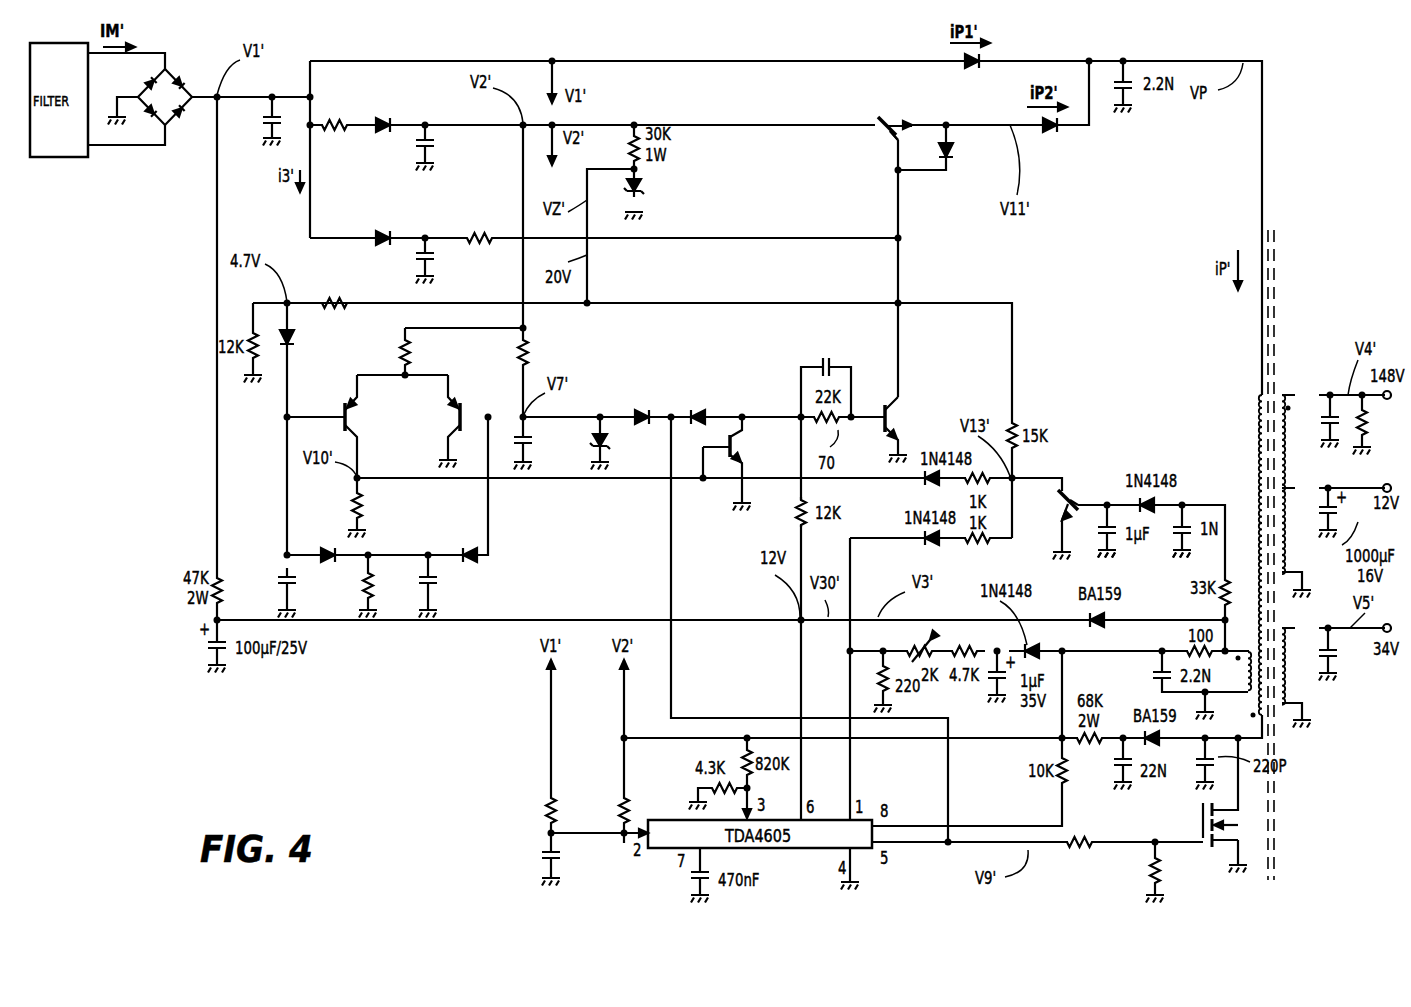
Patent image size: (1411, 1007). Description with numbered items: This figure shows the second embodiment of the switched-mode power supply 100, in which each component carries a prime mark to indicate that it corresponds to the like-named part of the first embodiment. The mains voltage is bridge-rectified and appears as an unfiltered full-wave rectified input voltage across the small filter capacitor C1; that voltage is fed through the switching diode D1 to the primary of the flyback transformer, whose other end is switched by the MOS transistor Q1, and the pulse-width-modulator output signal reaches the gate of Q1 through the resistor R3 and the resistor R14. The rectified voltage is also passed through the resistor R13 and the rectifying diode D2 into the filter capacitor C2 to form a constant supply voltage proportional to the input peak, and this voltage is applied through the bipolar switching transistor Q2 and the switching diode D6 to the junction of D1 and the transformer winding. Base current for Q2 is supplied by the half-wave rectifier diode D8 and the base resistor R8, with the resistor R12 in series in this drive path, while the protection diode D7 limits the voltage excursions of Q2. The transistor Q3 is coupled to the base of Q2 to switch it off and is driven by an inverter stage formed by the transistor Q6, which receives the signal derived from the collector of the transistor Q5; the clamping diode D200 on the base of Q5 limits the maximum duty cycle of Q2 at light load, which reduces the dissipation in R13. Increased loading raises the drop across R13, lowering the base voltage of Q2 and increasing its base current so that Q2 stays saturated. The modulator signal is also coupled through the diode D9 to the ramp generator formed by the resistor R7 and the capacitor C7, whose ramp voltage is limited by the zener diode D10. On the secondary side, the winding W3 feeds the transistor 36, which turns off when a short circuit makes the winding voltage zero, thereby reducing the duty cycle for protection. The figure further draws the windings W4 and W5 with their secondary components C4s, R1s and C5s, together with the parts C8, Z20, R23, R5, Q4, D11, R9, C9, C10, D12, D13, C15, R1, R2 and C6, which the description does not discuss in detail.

The filter capacitor C1 is at (254, 120).
The resistor R13 is at (334, 106).
The rectifying diode D2 is at (379, 103).
The filter capacitor C2 is at (445, 146).
The half-wave rectifier diode D8 is at (378, 216).
The capacitor C8 is at (451, 260).
The base resistor R8 is at (480, 215).
The zener diode Z20 is at (657, 191).
The resistor R23 is at (332, 281).
The clamping diode D200 is at (318, 341).
The resistor R5 is at (393, 350).
The resistor R7 is at (510, 350).
The transistor Q5 is at (369, 426).
The transistor Q4 is at (435, 417).
The resistor R12 is at (374, 505).
The diode D11 is at (325, 547).
The resistor R9 is at (390, 578).
The capacitor C9 is at (271, 587).
The capacitor C10 is at (448, 588).
The diode D12 is at (455, 529).
The capacitor C7 is at (542, 441).
The zener diode D10 is at (623, 451).
The diode D9 is at (639, 391).
The diode D13 is at (704, 391).
The transistor Q6 is at (748, 460).
The capacitor C15 is at (828, 341).
The transistor Q3 is at (913, 424).
The SMPS 100 is at (951, 375).
The switching transistor Q2 is at (890, 106).
The switching diode D1 is at (973, 85).
The protection diode D7 is at (974, 148).
The switching diode D6 is at (1051, 149).
The transistor 36 is at (1076, 497).
The resistor R1 is at (537, 806).
The resistor R2 is at (606, 806).
The capacitor C6 is at (530, 861).
The resistor R3 is at (1080, 865).
The resistor R14 is at (1138, 866).
The MOS switching transistor Q1 is at (1252, 826).
The secondary capacitor C4s is at (1323, 408).
The secondary resistor R1s is at (1383, 441).
The secondary capacitor C5s is at (1345, 662).
The secondary winding W4 is at (1298, 440).
The winding W3 is at (1298, 530).
The secondary winding W5 is at (1298, 666).